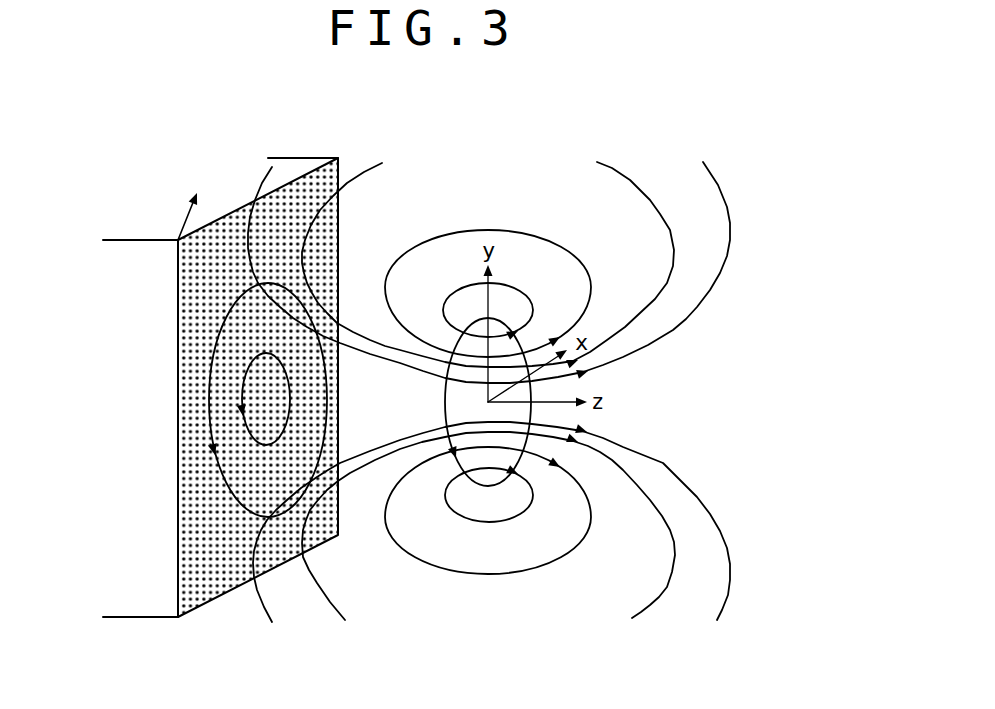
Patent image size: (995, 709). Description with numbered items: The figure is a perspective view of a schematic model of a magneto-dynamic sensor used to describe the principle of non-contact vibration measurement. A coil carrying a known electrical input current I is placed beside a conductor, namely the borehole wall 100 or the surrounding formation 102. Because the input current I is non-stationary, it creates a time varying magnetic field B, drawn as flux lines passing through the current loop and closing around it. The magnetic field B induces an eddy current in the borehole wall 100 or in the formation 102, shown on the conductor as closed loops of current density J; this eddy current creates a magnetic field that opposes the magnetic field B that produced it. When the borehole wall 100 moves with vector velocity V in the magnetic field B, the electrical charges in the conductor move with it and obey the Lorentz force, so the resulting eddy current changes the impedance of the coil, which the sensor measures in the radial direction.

The borehole wall 100 is at (215, 582).
The formation 102 is at (165, 340).
The vector velocity V is at (193, 163).
The current density J is at (95, 423).
The input current I is at (445, 398).
The magnetic field B is at (681, 334).